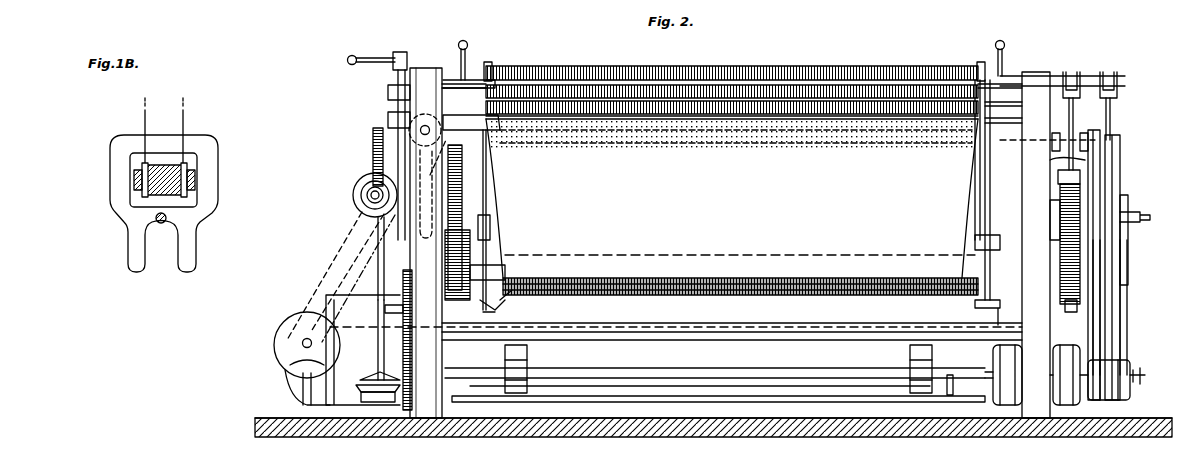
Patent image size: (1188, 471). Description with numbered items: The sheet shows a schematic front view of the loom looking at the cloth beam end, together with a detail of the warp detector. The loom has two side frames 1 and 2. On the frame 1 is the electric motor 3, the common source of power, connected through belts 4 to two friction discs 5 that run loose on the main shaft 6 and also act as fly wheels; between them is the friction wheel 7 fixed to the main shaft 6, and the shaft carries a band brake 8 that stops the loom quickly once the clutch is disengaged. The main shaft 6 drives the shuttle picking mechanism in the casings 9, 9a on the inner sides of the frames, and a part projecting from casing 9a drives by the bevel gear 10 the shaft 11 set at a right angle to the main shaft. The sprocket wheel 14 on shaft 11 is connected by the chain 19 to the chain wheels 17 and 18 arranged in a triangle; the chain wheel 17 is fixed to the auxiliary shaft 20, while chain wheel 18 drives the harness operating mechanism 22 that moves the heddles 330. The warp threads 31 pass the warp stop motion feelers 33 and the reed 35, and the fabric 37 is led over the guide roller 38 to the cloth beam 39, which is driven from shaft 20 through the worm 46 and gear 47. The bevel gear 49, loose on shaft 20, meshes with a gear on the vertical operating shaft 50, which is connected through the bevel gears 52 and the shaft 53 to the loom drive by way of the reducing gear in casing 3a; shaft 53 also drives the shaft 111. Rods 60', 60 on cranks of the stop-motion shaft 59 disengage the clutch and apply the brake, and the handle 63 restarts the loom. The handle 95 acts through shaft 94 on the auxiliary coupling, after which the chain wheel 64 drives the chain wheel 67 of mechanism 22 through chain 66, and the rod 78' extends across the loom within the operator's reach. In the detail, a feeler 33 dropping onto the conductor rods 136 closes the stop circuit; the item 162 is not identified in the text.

In FIG. 2, the side frame 1 is at (1030, 70).
In FIG. 2, the side frame 2 is at (428, 70).
In FIG. 2, the electric motor 3 is at (1070, 405).
In FIG. 2, the reducing gear casing 3a is at (992, 356).
In FIG. 2, the belts 4 is at (1092, 331).
In FIG. 2, the friction discs 5 is at (1090, 140).
In FIG. 2, the main shaft 6 is at (1145, 238).
In FIG. 2, the friction wheel 7 is at (1110, 195).
In FIG. 2, the band brake 8 is at (1068, 221).
In FIG. 2, the casing 9 is at (1005, 192).
In FIG. 2, the casing 9a is at (480, 182).
In FIG. 2, the bevel gear 10 is at (426, 236).
In FIG. 2, the shaft 11 is at (425, 125).
In FIG. 2, the sprocket wheel 14 is at (446, 122).
In FIG. 2, the chain wheel 17 is at (353, 202).
In FIG. 2, the chain wheel 18 is at (282, 364).
In FIG. 2, the chain 19 is at (334, 282).
In FIG. 2, the auxiliary shaft 20 is at (375, 220).
In FIG. 2, the harness operating mechanism 22 is at (284, 322).
In FIG. 1B, the warp threads 31 is at (161, 224).
In FIG. 1B, the warp stop motion feeler 33 is at (122, 212).
In FIG. 2, the reed 35 is at (773, 97).
In FIG. 2, the fabric 37 is at (692, 295).
In FIG. 2, the guide roller 38 is at (1006, 125).
In FIG. 2, the cloth beam 39 is at (680, 253).
In FIG. 2, the worm 46 is at (368, 190).
In FIG. 2, the gear 47 is at (372, 130).
In FIG. 2, the bevel gear 49 is at (366, 183).
In FIG. 2, the vertical operating shaft 50 is at (378, 364).
In FIG. 2, the bevel gears 52 is at (358, 385).
In FIG. 2, the shaft 53 is at (448, 368).
In FIG. 2, the stop-motion shaft 59 is at (1015, 138).
In FIG. 2, the rod 60 is at (1057, 156).
In FIG. 2, the rod 60' is at (1052, 165).
In FIG. 2, the handle 63 is at (463, 40).
In FIG. 2, the chain wheel 64 is at (350, 193).
In FIG. 2, the chain 66 is at (306, 278).
In FIG. 2, the chain wheel 67 is at (283, 331).
In FIG. 2, the rod 78' is at (718, 427).
In FIG. 2, the shaft 94 is at (388, 104).
In FIG. 2, the handle 95 is at (347, 58).
In FIG. 2, the shaft 111 is at (385, 348).
In FIG. 1B, the conductor rods 136 is at (142, 166).
In FIG. 2, the rail 162 is at (801, 322).
In FIG. 2, the heddles 330 is at (488, 62).